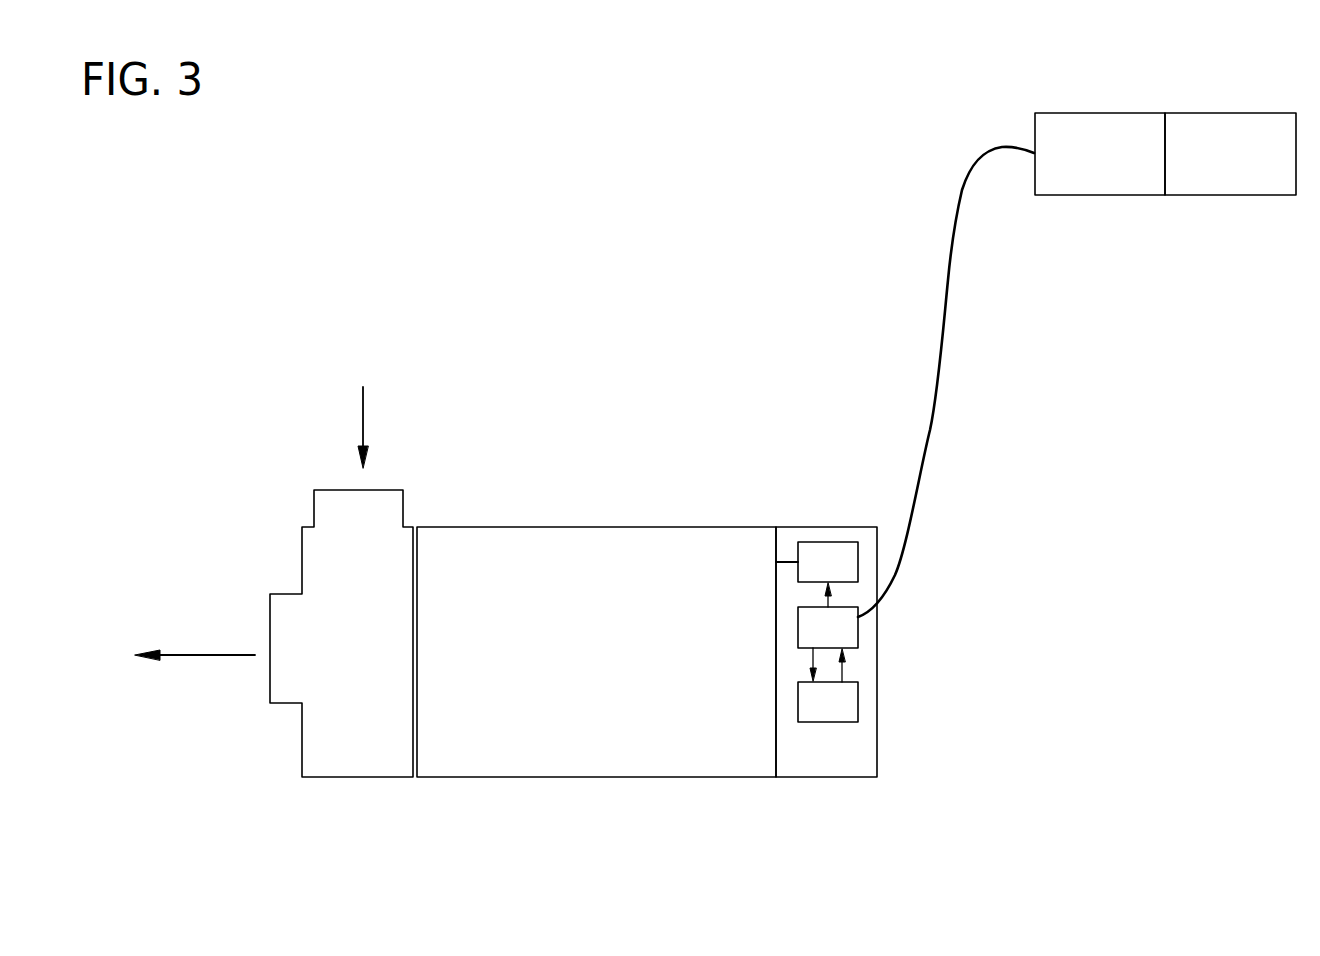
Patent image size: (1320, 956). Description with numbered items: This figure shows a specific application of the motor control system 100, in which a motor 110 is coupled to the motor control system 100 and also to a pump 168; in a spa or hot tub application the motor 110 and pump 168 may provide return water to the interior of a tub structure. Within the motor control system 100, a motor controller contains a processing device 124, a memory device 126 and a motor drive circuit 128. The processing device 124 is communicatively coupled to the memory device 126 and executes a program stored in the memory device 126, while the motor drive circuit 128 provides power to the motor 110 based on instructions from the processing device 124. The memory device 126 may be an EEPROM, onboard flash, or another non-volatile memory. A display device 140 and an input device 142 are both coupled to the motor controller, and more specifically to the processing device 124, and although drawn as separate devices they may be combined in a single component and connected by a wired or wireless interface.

The motor control system 100 is at (818, 527).
The motor 110 is at (617, 777).
The processing device 124 is at (858, 638).
The memory device 126 is at (858, 702).
The motor drive circuit 128 is at (858, 553).
The display device 140 is at (1082, 195).
The input device 142 is at (1237, 195).
The pump 168 is at (355, 777).